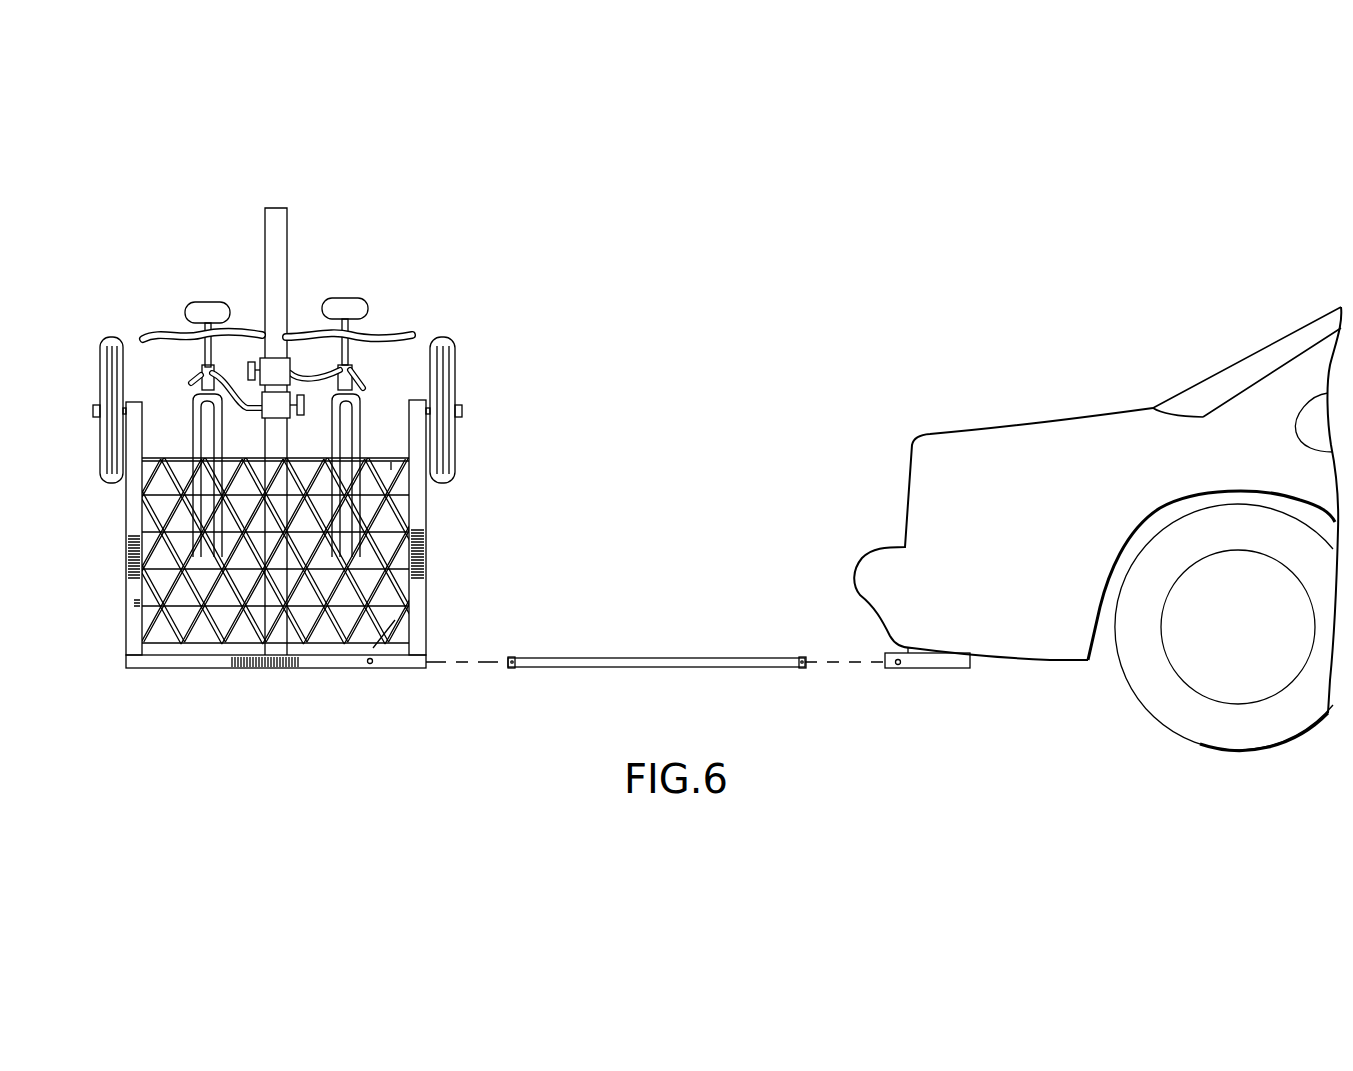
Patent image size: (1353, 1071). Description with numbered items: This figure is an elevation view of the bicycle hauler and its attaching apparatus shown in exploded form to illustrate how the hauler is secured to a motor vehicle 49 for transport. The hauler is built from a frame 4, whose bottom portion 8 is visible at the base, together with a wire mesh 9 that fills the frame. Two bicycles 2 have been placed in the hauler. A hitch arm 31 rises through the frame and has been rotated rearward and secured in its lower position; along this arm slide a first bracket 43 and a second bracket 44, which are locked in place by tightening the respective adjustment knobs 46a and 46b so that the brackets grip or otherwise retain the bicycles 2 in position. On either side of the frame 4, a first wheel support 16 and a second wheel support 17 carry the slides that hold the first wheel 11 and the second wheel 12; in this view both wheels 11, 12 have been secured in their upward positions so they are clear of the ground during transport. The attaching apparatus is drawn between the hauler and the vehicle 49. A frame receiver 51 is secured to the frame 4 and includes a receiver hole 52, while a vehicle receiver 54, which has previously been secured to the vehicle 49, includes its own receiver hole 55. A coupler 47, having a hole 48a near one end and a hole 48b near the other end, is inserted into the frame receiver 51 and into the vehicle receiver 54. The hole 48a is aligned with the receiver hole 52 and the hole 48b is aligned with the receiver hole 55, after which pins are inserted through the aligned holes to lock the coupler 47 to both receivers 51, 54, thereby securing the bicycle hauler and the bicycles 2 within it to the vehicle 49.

The bicycle 2 is at (163, 331).
The frame 4 is at (390, 462).
The bottom portion 8 is at (373, 648).
The wire mesh 9 is at (173, 550).
The first wheel 11 is at (453, 380).
The second wheel 12 is at (100, 392).
The first wheel support 16 is at (126, 606).
The second wheel support 17 is at (428, 520).
The hitch arm 31 is at (287, 208).
The first bracket 43 is at (311, 370).
The second bracket 44 is at (190, 380).
The adjustment knob 46a is at (247, 358).
The adjustment knob 46b is at (320, 410).
The coupler 47 is at (636, 658).
The hole 48a is at (512, 660).
The hole 48b is at (800, 660).
The motor vehicle 49 is at (905, 507).
The frame receiver 51 is at (275, 668).
The receiver hole 52 is at (373, 664).
The vehicle receiver 54 is at (928, 678).
The receiver hole 55 is at (895, 665).